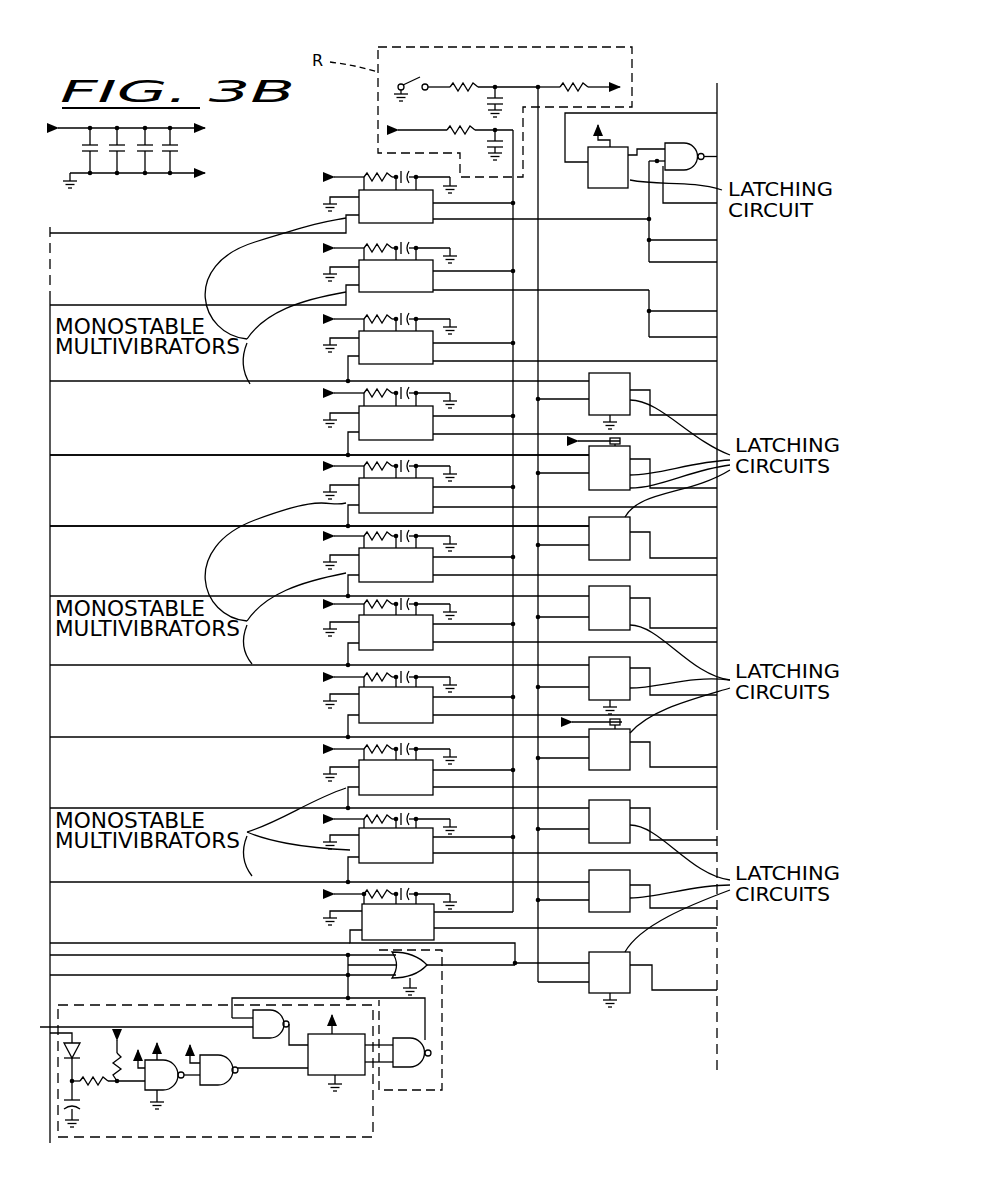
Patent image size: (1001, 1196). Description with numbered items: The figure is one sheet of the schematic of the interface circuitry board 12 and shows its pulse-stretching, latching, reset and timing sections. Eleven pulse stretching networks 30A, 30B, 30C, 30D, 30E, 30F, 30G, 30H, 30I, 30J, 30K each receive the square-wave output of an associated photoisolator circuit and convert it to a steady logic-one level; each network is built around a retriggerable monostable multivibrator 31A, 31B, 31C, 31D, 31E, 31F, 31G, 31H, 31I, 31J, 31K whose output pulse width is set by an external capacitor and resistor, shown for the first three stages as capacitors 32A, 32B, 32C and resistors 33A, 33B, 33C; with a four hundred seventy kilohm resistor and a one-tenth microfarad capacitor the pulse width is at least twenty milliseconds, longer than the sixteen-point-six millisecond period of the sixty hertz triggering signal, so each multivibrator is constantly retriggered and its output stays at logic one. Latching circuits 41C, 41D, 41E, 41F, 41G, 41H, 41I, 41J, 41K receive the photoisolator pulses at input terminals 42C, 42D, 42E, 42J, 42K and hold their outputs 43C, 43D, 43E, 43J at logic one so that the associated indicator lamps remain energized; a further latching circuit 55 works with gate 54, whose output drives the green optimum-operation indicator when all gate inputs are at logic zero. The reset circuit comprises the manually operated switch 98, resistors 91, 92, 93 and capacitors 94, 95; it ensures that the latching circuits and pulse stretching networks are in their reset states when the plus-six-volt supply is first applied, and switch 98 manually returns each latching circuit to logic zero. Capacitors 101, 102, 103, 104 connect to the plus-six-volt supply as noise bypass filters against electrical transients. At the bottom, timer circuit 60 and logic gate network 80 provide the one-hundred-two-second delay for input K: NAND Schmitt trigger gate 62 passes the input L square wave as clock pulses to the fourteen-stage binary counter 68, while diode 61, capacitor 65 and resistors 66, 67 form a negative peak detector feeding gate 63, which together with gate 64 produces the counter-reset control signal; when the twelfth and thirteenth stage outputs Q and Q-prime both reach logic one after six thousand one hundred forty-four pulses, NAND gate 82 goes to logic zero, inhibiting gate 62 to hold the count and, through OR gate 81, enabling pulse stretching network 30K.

The capacitor 101 is at (86, 148).
The capacitor 102 is at (114, 155).
The capacitor 103 is at (143, 155).
The capacitor 104 is at (171, 155).
The manually operated switch 98 is at (417, 77).
The resistor 92 is at (466, 80).
The resistor 93 is at (572, 80).
The resistor 91 is at (448, 126).
The capacitor 95 is at (487, 100).
The capacitor 94 is at (487, 147).
The pulse stretching network 30A is at (310, 214).
The retriggerable monostable multi-vibrator integrated circuit 31A is at (349, 176).
The capacitor 32A is at (378, 170).
The resistor 33A is at (402, 170).
The pulse stretching network 30B is at (310, 283).
The retriggerable monostable multi-vibrator integrated circuit 31B is at (349, 265).
The capacitor 32B is at (396, 250).
The resistor 33B is at (412, 242).
The pulse stretching network 30C is at (310, 346).
The retriggerable monostable multi-vibrator integrated circuit 31C is at (383, 339).
The capacitor 32C is at (396, 321).
The resistor 33C is at (412, 313).
The pulse stretching network 30D is at (310, 428).
The retriggerable monostable multi-vibrator integrated circuit 31D is at (383, 421).
The pulse stretching network 30E is at (310, 497).
The retriggerable monostable multi-vibrator integrated circuit 31E is at (383, 493).
The pulse stretching network 30F is at (310, 567).
The retriggerable monostable multi-vibrator integrated circuit 31F is at (383, 563).
The pulse stretching network 30G is at (322, 625).
The retriggerable monostable multi-vibrator integrated circuit 31G is at (383, 631).
The pulse stretching network 30H is at (310, 709).
The retriggerable monostable multi-vibrator integrated circuit 31H is at (383, 703).
The pulse stretching network 30I is at (310, 779).
The retriggerable monostable multi-vibrator integrated circuit 31I is at (383, 775).
The pulse stretching network 30J is at (318, 843).
The retriggerable monostable multi-vibrator integrated circuit 31J is at (383, 847).
The pulse stretching network 30K is at (310, 922).
The retriggerable monostable multi-vibrator integrated circuit 31K is at (383, 924).
The latching circuit 55 is at (641, 150).
The gate 54 is at (672, 173).
The latching circuit 41C is at (633, 409).
The input terminal 42C is at (586, 390).
The output 43C is at (632, 390).
The latching circuit 41D is at (390, 464).
The input terminal 42D is at (584, 460).
The output 43D is at (642, 466).
The latching circuit 41E is at (390, 515).
The input terminal 42E is at (584, 531).
The output 43E is at (645, 530).
The latching circuit 41F is at (633, 633).
The latching circuit 41G is at (633, 685).
The latching circuit 41H is at (633, 729).
The latching circuit 41I is at (633, 840).
The latching circuit 41J is at (633, 887).
The input terminal 42J is at (585, 884).
The output 43J is at (645, 885).
The latching circuit 41K is at (621, 948).
The input terminal 42K is at (585, 968).
The OR gate 81 is at (282, 973).
The NAND gate 82 is at (398, 1052).
The logic gate network 80 is at (444, 1040).
The timer circuit 60 is at (374, 1100).
The diode 61 is at (80, 1052).
The NAND Schmitt trigger gate 62 is at (270, 1027).
The NAND Schmitt trigger gate 63 is at (157, 1069).
The NAND Schmitt trigger gate 64 is at (246, 1058).
The capacitor 65 is at (78, 1104).
The resistor 66 is at (95, 1086).
The resistor 67 is at (120, 1070).
The 14-stage binary counter 68 is at (318, 1078).
The interface circuitry board 12 is at (472, 1127).